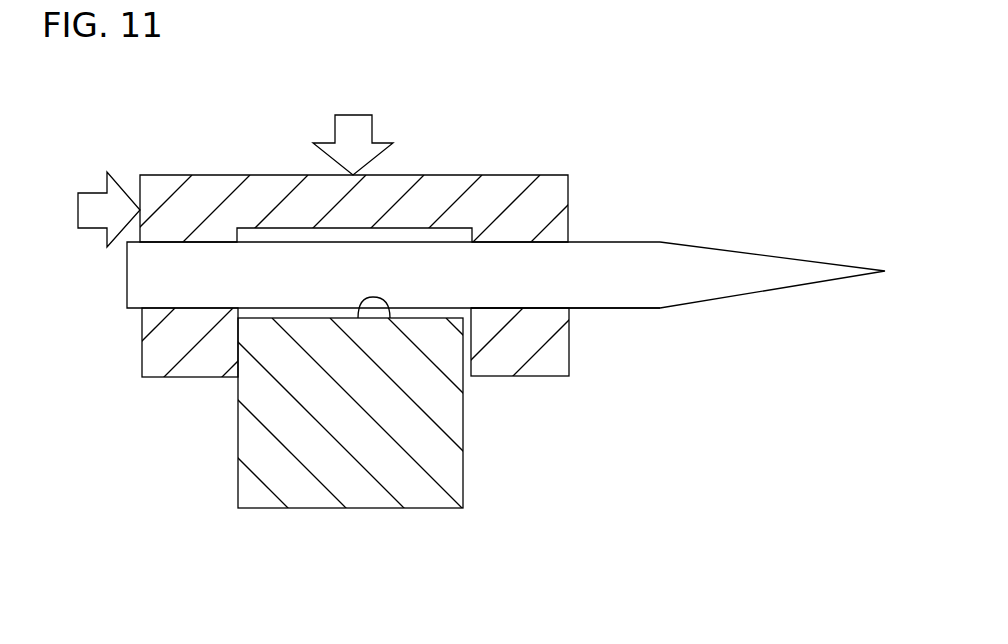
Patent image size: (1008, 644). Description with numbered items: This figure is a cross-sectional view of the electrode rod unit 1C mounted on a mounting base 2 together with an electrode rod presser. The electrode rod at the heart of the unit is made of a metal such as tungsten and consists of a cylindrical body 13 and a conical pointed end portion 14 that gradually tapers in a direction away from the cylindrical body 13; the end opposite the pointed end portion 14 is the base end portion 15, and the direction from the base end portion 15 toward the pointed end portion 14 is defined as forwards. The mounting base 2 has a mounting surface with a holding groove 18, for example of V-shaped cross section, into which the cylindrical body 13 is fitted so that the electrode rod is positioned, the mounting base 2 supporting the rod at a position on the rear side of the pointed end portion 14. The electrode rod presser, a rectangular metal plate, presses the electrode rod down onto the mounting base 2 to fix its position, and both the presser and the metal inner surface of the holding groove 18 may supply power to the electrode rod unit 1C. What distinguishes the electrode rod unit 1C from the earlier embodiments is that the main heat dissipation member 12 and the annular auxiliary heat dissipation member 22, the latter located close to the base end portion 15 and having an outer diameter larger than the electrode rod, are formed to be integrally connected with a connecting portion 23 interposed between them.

The electrode rod unit 1C is at (655, 162).
The mounting base 2 is at (238, 481).
The main heat dissipation member 12 is at (522, 377).
The cylindrical body 13 is at (546, 293).
The pointed end portion 14 is at (748, 280).
The base end portion 15 is at (127, 281).
The holding groove 18 is at (390, 318).
The auxiliary heat dissipation member 22 is at (180, 378).
The connecting portion 23 is at (399, 186).